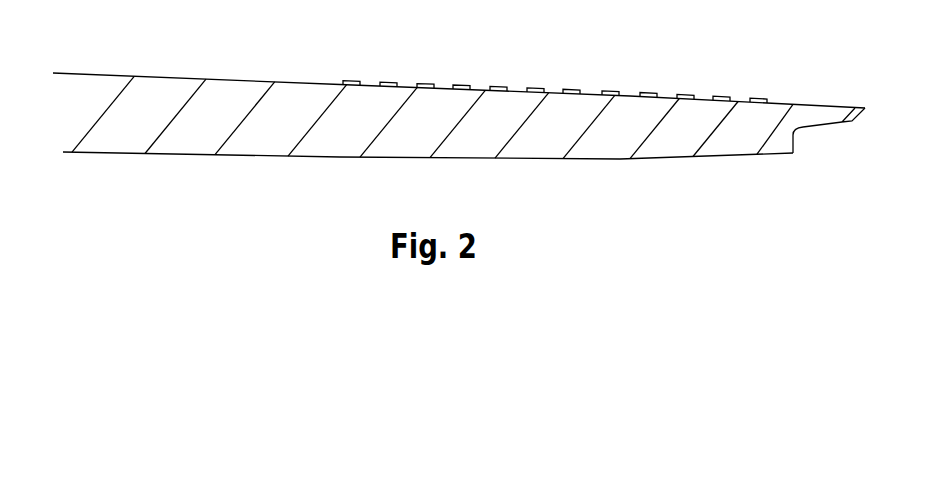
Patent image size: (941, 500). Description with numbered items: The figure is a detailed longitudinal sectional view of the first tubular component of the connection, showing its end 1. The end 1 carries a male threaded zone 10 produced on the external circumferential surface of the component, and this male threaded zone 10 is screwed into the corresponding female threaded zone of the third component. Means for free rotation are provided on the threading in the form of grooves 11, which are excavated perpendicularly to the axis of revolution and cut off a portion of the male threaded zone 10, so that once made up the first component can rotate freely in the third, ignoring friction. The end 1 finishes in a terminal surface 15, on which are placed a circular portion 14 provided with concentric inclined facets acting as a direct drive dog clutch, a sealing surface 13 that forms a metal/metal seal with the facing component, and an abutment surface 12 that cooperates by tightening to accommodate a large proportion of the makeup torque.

The end 1 is at (322, 128).
The male threaded zone 10 is at (498, 74).
The grooves 11 is at (668, 89).
The abutment surface 12 is at (798, 147).
The sealing surface 13 is at (805, 131).
The circular portion 14 is at (860, 118).
The terminal surface 15 is at (863, 152).